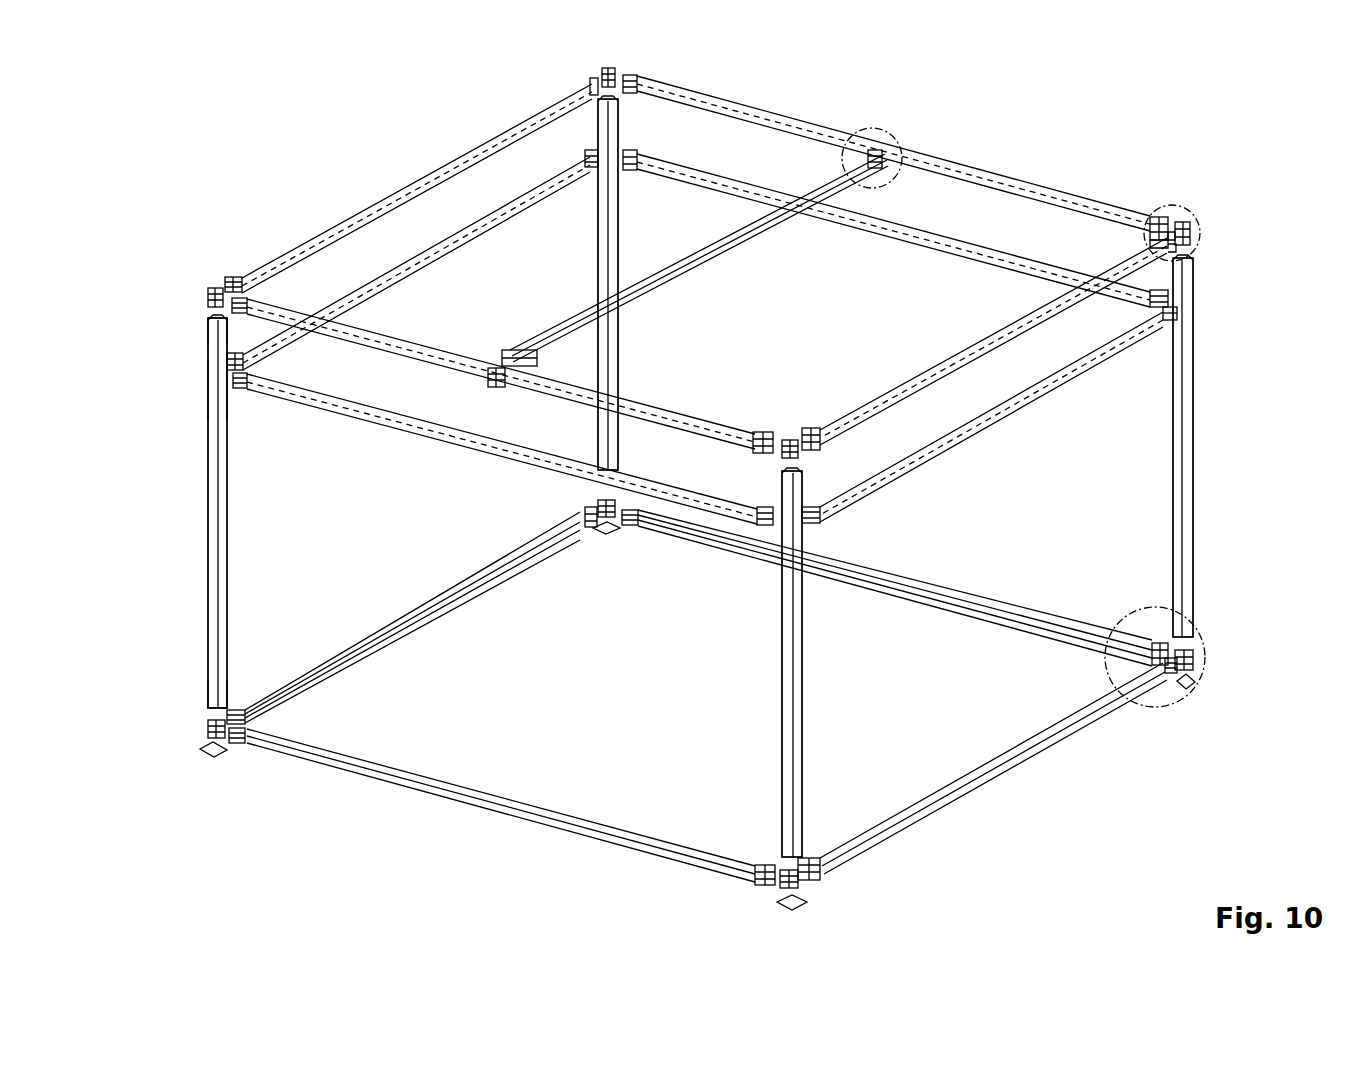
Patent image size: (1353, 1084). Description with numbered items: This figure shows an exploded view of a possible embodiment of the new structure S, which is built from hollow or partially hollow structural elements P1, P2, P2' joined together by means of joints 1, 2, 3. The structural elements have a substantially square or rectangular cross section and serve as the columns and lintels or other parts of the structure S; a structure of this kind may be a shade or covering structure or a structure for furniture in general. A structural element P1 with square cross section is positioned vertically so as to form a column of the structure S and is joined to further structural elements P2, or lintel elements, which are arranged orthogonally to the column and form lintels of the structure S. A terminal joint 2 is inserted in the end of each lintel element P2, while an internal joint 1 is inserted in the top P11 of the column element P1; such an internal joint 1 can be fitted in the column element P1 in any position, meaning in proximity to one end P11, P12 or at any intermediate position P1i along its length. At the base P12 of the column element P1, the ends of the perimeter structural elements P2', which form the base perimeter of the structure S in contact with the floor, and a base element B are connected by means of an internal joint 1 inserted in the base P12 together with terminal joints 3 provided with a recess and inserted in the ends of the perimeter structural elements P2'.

The structure S is at (1214, 129).
The internal joint 1 is at (213, 290).
The terminal joint 2 is at (1160, 225).
The terminal joint 3 is at (1160, 648).
The structural element P1 is at (218, 527).
The top P11 is at (200, 320).
The intermediate position P1i is at (198, 378).
The base P12 is at (200, 705).
The structural element P2 is at (704, 300).
The perimeter structural element P2' is at (706, 696).
The base element B is at (1196, 678).